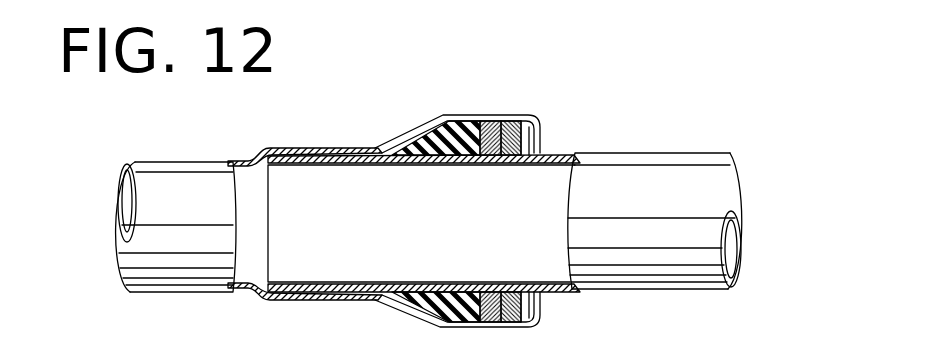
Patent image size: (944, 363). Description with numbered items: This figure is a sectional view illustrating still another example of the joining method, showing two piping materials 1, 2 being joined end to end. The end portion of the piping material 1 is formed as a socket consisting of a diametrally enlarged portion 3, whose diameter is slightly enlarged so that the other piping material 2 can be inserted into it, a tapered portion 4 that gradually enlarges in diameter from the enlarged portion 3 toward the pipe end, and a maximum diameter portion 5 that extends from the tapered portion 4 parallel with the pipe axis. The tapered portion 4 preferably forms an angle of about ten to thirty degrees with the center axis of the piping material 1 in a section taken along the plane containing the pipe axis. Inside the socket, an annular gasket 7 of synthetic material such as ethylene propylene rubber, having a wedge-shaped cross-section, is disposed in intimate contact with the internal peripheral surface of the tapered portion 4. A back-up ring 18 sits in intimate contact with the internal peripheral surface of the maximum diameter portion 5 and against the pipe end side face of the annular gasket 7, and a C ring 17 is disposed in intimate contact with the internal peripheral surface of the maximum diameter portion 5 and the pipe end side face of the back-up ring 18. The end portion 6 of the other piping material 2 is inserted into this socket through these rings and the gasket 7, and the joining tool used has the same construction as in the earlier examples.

The piping material 1 is at (175, 185).
The other piping material 2 is at (693, 170).
The diametrally enlarged portion 3 is at (285, 146).
The tapered portion 4 is at (403, 138).
The maximum diameter portion 5 is at (470, 113).
The end portion 6 is at (335, 146).
The annular gasket 7 is at (428, 145).
The C ring 17 is at (539, 124).
The back-up ring 18 is at (498, 118).